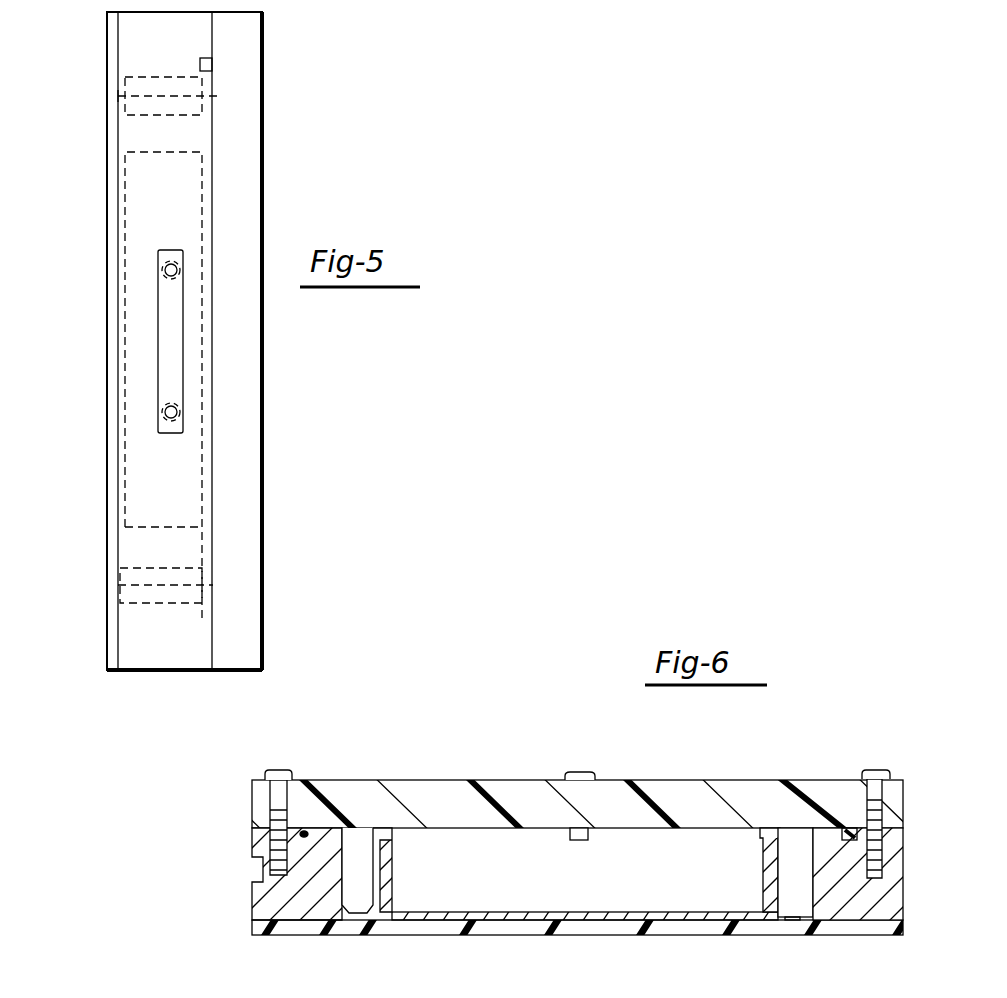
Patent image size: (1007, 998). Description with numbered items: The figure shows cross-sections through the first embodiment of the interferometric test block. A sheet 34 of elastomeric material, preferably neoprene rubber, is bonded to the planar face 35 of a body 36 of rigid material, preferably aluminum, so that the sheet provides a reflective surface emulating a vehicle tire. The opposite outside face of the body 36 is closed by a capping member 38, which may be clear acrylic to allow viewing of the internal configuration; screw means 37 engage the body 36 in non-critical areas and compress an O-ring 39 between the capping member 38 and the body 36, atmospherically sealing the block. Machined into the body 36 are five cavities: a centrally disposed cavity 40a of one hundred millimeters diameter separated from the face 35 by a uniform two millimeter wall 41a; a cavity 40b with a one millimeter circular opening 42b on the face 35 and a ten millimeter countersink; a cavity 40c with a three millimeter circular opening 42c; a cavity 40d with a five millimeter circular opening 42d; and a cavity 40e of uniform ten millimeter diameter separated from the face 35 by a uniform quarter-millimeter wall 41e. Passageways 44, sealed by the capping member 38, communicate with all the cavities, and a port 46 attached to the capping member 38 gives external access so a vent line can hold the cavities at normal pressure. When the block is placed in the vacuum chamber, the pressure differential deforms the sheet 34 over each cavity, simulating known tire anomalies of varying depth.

In FIG. 5, the sheet 34 is at (107, 672).
In FIG. 6, the sheet 34 is at (250, 927).
In FIG. 5, the planar face 35 is at (116, 512).
In FIG. 6, the planar face 35 is at (327, 918).
In FIG. 5, the body 36 is at (163, 649).
In FIG. 6, the body 36 is at (258, 899).
In FIG. 6, the screw means 37 is at (879, 766).
In FIG. 5, the capping member 38 is at (246, 566).
In FIG. 6, the capping member 38 is at (258, 795).
In FIG. 5, the O-ring 39 is at (207, 62).
In FIG. 6, the O-ring 39 is at (307, 828).
In FIG. 6, the centrally disposed cavity 40a is at (492, 858).
In FIG. 6, the cavity 40b is at (787, 893).
In FIG. 5, the cavity 40c is at (153, 97).
In FIG. 6, the cavity 40d is at (358, 848).
In FIG. 5, the cavity 40e is at (152, 587).
In FIG. 6, the wall 41a is at (430, 930).
In FIG. 5, the wall 41e is at (116, 592).
In FIG. 6, the circular opening 42b is at (795, 930).
In FIG. 5, the circular opening 42c is at (118, 97).
In FIG. 6, the circular opening 42d is at (371, 926).
In FIG. 5, the passageways 44 is at (210, 133).
In FIG. 6, the passageways 44 is at (388, 838).
In FIG. 6, the port 46 is at (592, 782).